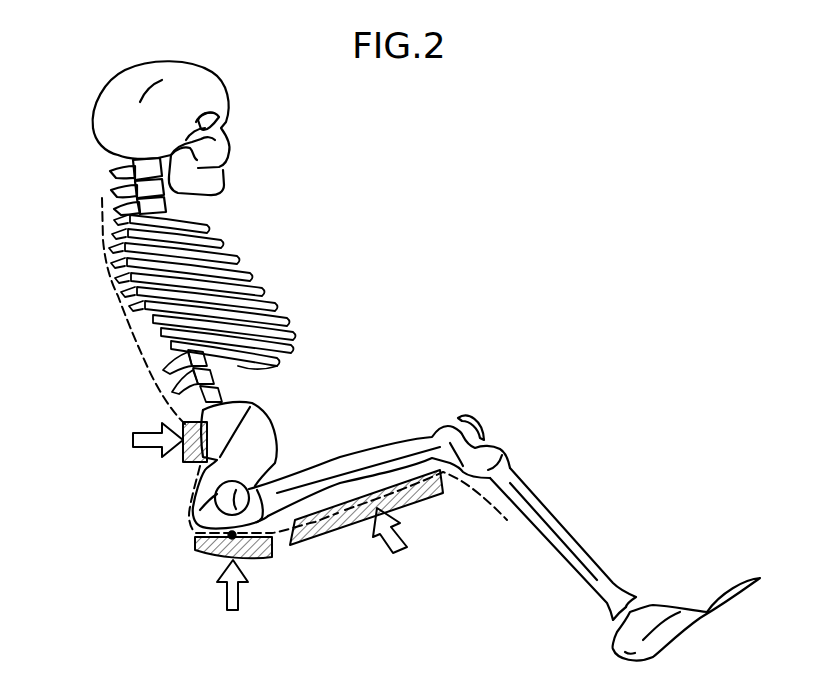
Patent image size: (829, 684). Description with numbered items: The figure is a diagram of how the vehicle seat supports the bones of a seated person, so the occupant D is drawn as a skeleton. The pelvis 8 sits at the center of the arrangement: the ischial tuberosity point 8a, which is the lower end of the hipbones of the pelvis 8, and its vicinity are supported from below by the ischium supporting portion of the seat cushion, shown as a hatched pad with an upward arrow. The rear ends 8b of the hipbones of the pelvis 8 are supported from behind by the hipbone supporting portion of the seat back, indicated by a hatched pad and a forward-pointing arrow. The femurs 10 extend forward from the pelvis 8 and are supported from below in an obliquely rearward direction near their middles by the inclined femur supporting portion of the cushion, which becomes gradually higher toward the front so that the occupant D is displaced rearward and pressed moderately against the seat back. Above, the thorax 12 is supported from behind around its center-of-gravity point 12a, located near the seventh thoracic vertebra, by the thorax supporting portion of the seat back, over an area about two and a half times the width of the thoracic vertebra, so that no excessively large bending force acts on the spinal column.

The thorax 12 is at (217, 210).
The center-of-gravity point of the thorax 12a is at (118, 297).
The pelvis 8 is at (277, 438).
The ischial tuberosity point 8a is at (192, 546).
The rear end of the hipbone 8b is at (190, 420).
The femur 10 is at (365, 450).
The occupant D is at (298, 130).